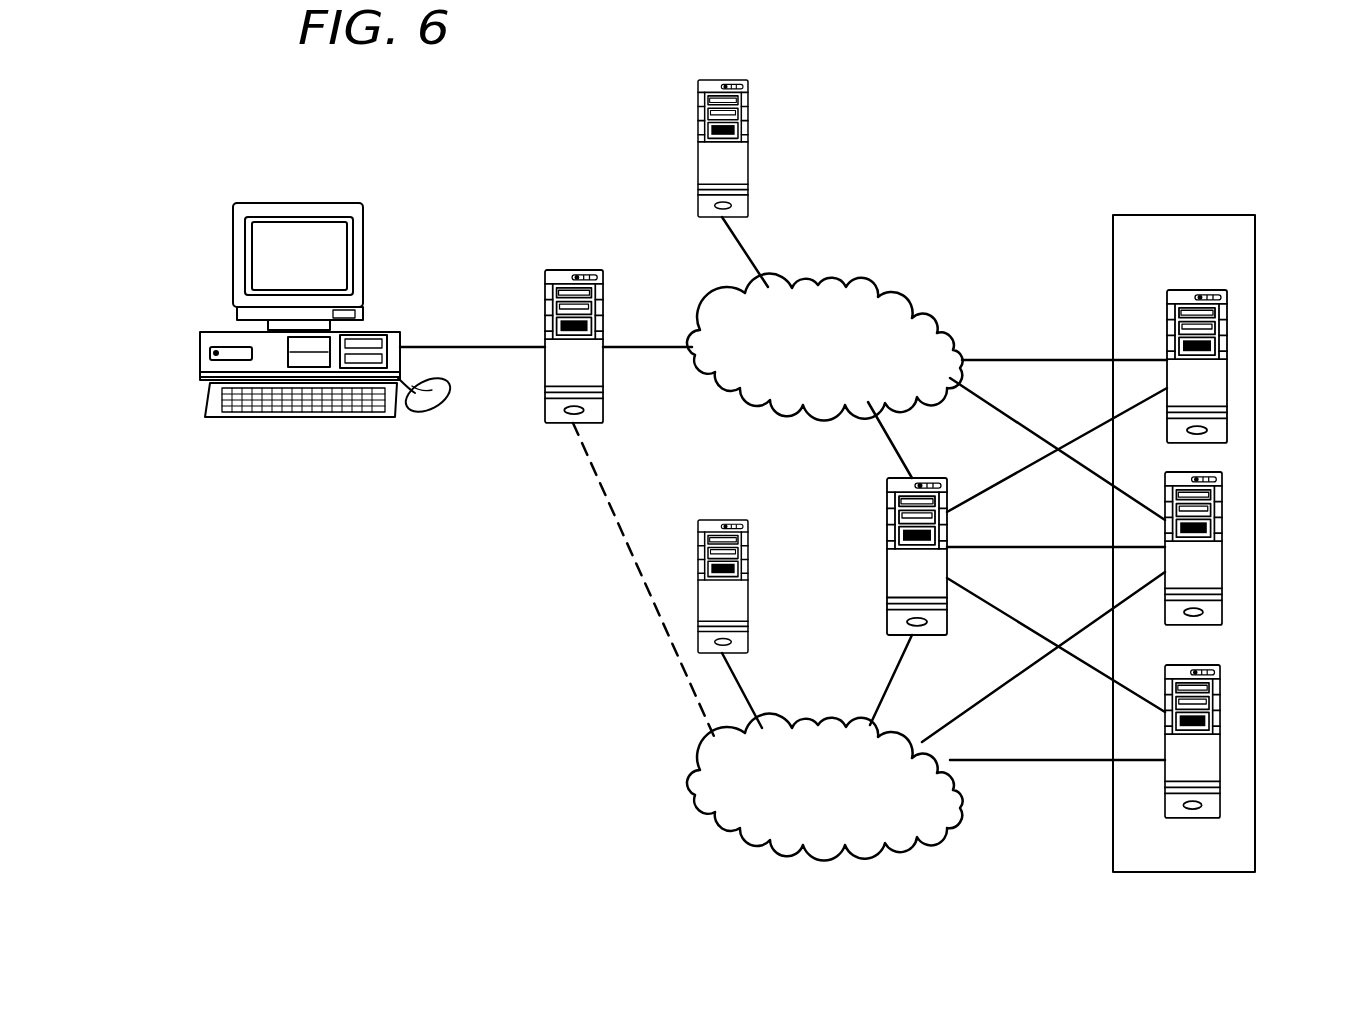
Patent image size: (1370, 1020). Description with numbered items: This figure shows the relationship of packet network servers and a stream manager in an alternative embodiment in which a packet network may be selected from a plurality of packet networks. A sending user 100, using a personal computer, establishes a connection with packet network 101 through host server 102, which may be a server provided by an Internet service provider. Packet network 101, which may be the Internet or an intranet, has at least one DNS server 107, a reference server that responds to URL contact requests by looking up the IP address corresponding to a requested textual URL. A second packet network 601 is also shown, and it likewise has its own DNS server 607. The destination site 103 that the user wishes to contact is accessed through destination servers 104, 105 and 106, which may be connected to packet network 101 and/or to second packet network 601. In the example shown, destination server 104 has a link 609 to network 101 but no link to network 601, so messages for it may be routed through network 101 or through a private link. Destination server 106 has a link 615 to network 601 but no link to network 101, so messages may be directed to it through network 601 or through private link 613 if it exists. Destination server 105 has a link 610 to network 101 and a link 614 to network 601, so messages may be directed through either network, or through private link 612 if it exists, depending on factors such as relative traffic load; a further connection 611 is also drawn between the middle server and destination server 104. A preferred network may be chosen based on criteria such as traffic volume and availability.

The sending user 100 is at (300, 203).
The packet network 101 is at (823, 401).
The host server 102 is at (561, 270).
The destination site 103 is at (1195, 215).
The destination server 104 is at (1223, 383).
The destination server 105 is at (1215, 565).
The destination server 106 is at (1211, 752).
The DNS server 107 is at (704, 158).
The second packet network 601 is at (822, 843).
The DNS server 607 is at (703, 521).
The link 609 is at (1070, 358).
The link 610 is at (1004, 418).
The connection 611 is at (1092, 437).
The private link 612 is at (1059, 546).
The private link 613 is at (1009, 614).
The link 614 is at (1101, 621).
The link 615 is at (1063, 760).